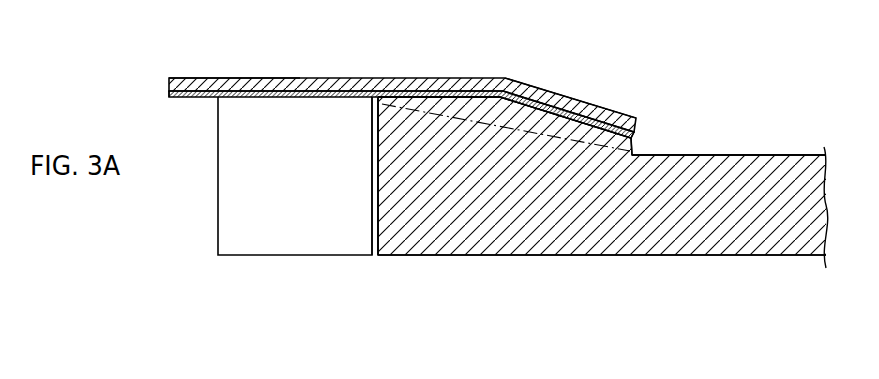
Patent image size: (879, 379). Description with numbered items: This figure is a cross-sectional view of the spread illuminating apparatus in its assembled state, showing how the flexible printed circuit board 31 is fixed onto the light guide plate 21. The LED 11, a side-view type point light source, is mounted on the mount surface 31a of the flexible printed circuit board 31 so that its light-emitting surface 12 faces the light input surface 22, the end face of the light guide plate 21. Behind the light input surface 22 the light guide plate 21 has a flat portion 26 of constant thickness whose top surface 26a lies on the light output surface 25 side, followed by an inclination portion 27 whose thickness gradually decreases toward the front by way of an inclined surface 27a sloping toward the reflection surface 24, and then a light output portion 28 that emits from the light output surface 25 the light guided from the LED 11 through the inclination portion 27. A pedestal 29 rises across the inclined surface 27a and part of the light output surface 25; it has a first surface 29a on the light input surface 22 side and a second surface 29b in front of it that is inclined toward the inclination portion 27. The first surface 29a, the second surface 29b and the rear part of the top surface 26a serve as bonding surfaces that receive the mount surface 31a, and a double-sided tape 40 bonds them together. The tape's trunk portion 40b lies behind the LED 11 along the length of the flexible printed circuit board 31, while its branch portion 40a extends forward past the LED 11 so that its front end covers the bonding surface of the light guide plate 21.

The LED 11 is at (286, 242).
The light-emitting surface 12 is at (385, 238).
The light guide plate 21 is at (730, 306).
The light input surface 22 is at (379, 222).
The reflection surface 24 is at (791, 258).
The light output surface 25 is at (794, 153).
The flat portion 26 is at (418, 197).
The top surface 26a is at (402, 95).
The inclination portion 27 is at (600, 226).
The inclined surface 27a is at (556, 125).
The light output portion 28 is at (726, 228).
The pedestal 29 is at (632, 151).
The first surface 29a is at (455, 84).
The second surface 29b is at (601, 109).
The flexible printed circuit board 31 is at (322, 86).
The mount surface 31a is at (249, 96).
The double-sided tape 40 is at (528, 92).
The branch portion 40a is at (634, 131).
The trunk portion 40b is at (201, 93).